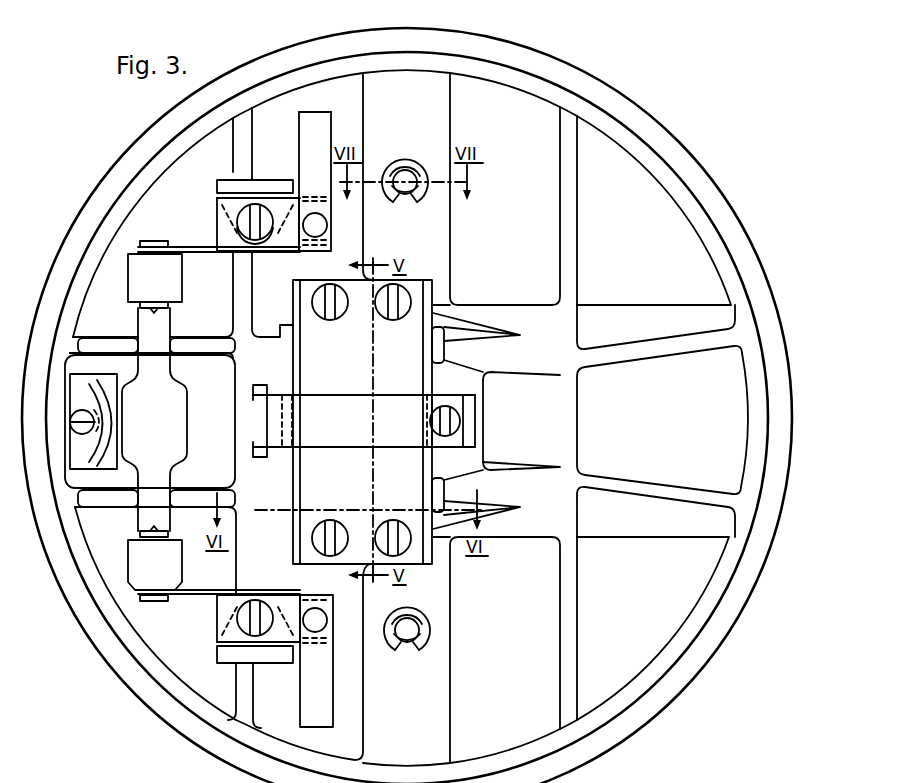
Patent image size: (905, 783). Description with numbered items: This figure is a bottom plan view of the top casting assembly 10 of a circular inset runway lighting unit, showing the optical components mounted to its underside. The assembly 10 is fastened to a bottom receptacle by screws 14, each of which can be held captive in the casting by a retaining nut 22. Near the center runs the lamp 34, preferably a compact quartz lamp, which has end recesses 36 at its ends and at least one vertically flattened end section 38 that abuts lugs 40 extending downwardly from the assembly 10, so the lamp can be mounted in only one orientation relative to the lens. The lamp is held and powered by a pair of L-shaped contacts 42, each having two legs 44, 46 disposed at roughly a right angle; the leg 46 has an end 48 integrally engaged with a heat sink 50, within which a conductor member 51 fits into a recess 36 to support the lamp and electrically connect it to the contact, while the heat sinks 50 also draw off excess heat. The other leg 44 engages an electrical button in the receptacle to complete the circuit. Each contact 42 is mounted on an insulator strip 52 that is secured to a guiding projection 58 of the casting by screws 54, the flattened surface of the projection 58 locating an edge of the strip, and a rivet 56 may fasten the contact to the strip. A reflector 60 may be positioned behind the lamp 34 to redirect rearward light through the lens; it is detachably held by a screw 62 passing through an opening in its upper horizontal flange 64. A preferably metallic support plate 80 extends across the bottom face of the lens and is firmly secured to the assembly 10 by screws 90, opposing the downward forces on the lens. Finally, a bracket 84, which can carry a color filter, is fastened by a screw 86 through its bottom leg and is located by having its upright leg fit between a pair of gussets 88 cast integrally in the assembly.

The top casting assembly 10 is at (160, 186).
The screw 14 is at (407, 180).
The retaining nut 22 is at (419, 197).
The lamp 34 is at (178, 406).
The end recesses 36 is at (138, 314).
The vertically flattened end section 38 is at (157, 492).
The lugs 40 is at (205, 493).
The contacts 42 is at (308, 128).
The leg 44 is at (312, 178).
The leg 46 is at (262, 249).
The end 48 is at (165, 242).
The heat sink 50 is at (168, 284).
The conductor member 51 is at (153, 243).
The insulator strip 52 is at (222, 229).
The screws 54 is at (262, 212).
The rivet 56 is at (322, 228).
The guiding projection 58 is at (238, 180).
The reflector 60 is at (106, 392).
The screw 62 is at (75, 422).
The upper horizontal flange 64 is at (84, 454).
The support plate 80 is at (403, 376).
The bracket 84 is at (380, 432).
The screw 86 is at (455, 424).
The gussets 88 is at (258, 444).
The screws 90 is at (381, 303).